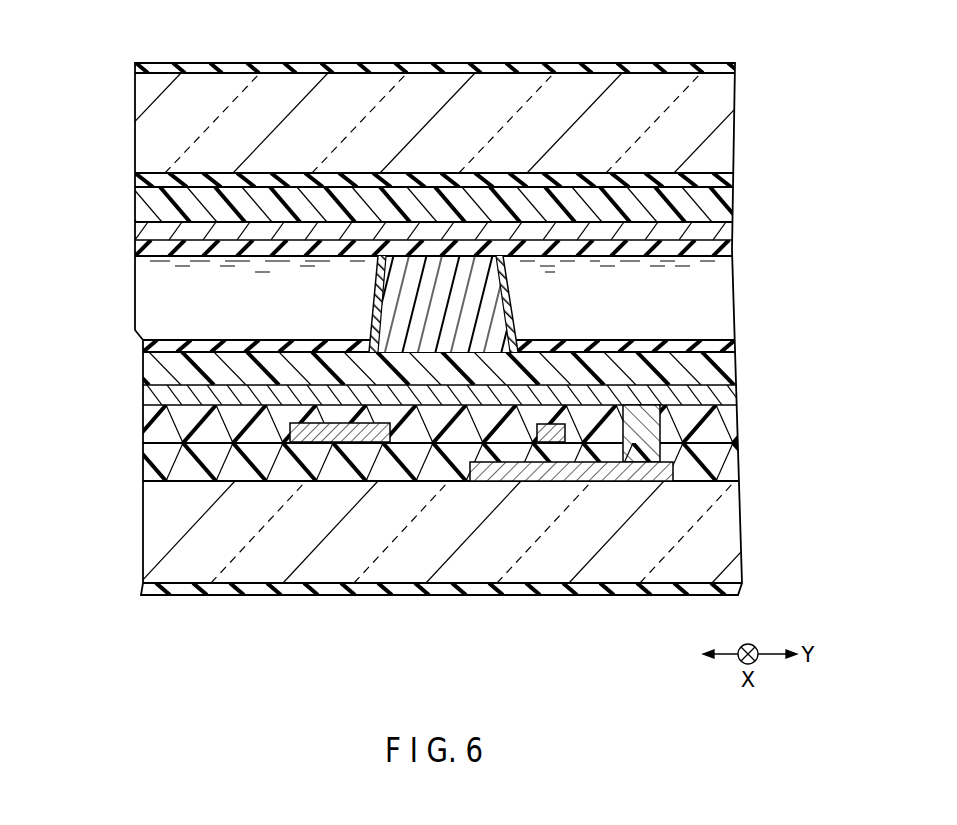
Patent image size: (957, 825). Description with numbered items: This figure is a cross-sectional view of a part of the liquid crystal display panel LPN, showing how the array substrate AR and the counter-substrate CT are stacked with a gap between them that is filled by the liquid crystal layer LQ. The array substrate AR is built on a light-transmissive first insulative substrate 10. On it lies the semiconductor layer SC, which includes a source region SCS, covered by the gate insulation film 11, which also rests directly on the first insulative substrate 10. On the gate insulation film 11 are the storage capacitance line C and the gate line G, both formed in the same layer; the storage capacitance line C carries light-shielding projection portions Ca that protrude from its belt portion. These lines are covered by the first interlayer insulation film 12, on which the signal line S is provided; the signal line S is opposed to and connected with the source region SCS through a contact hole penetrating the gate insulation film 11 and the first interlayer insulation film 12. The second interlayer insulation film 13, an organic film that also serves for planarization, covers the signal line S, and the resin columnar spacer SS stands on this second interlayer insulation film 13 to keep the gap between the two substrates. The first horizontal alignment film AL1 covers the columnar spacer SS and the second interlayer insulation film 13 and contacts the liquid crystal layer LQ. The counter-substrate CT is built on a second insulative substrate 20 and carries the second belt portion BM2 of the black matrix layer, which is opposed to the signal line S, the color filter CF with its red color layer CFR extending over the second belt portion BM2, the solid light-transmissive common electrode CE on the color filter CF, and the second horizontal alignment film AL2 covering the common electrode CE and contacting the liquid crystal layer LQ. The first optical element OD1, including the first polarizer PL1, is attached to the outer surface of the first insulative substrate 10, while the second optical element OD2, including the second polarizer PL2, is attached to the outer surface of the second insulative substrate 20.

The liquid crystal display panel LPN is at (433, 343).
The counter-substrate CT is at (432, 138).
The array substrate AR is at (433, 506).
The second optical element OD2 is at (440, 37).
The second polarizer PL2 is at (468, 64).
The first optical element OD1 is at (440, 633).
The first polarizer PL1 is at (430, 596).
The second insulative substrate 20 is at (724, 136).
The first insulative substrate 10 is at (728, 543).
The second belt portion BM2 is at (134, 181).
The color filter CF is at (466, 119).
The red color layer CFR is at (262, 196).
The common electrode CE is at (728, 229).
The second horizontal alignment film AL2 is at (728, 249).
The first horizontal alignment film AL1 is at (728, 346).
The liquid crystal layer LQ is at (728, 296).
The columnar spacer SS is at (510, 292).
The second interlayer insulation film 13 is at (728, 368).
The first interlayer insulation film 12 is at (464, 525).
The gate insulation film 11 is at (464, 544).
The projection portion Ca is at (314, 443).
The storage capacitance line C is at (365, 443).
The semiconductor layer SC is at (505, 482).
The gate line G is at (550, 443).
The source region SCS is at (622, 481).
The signal line S is at (643, 452).